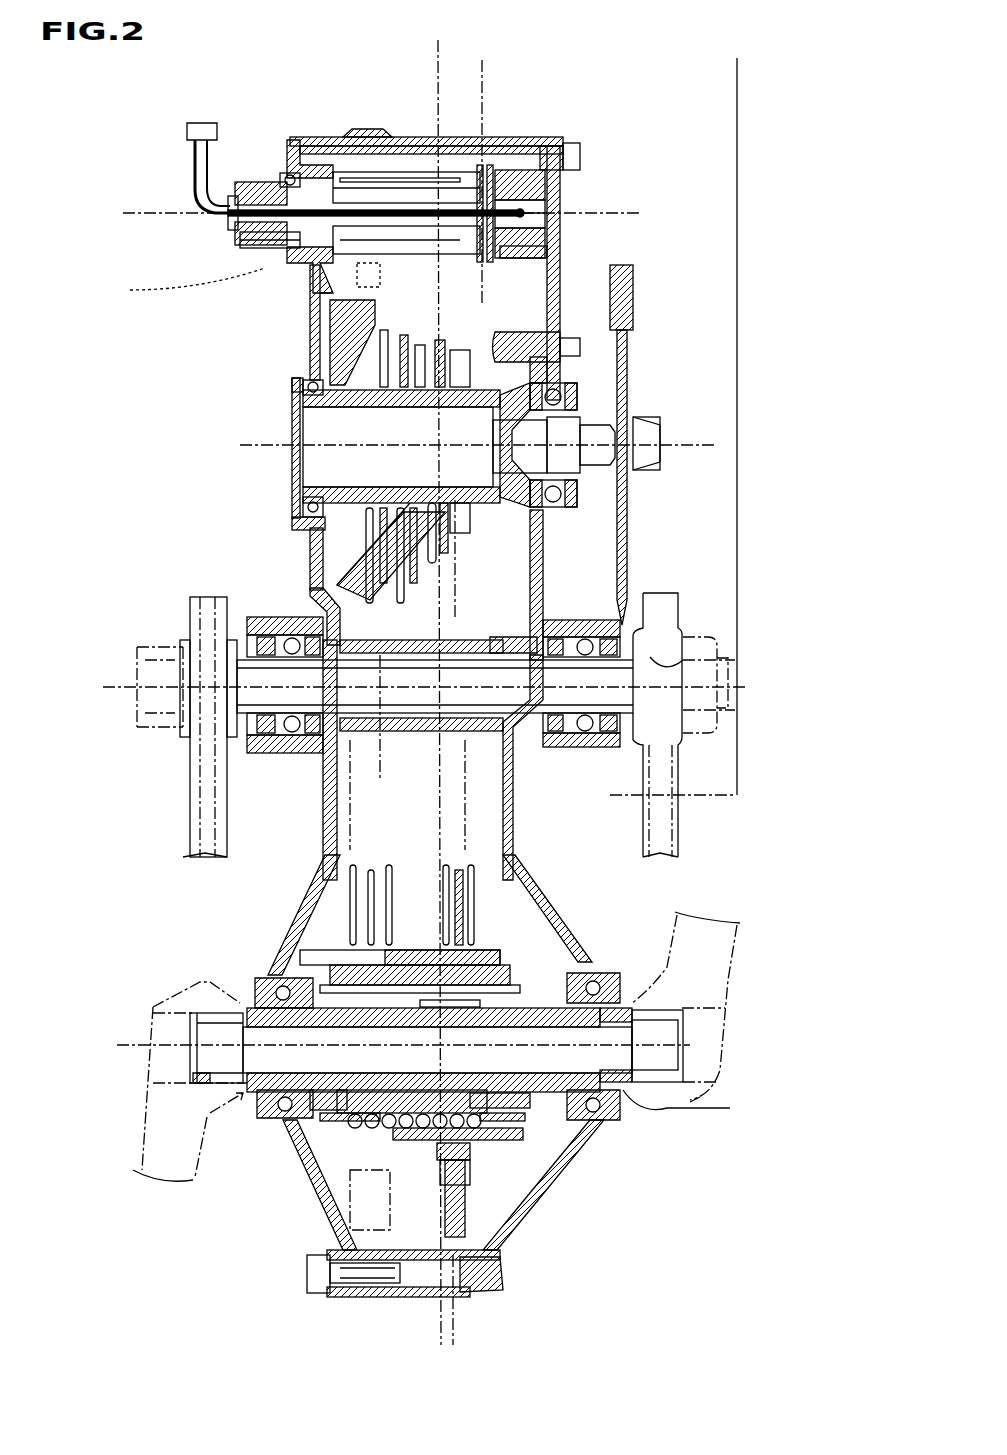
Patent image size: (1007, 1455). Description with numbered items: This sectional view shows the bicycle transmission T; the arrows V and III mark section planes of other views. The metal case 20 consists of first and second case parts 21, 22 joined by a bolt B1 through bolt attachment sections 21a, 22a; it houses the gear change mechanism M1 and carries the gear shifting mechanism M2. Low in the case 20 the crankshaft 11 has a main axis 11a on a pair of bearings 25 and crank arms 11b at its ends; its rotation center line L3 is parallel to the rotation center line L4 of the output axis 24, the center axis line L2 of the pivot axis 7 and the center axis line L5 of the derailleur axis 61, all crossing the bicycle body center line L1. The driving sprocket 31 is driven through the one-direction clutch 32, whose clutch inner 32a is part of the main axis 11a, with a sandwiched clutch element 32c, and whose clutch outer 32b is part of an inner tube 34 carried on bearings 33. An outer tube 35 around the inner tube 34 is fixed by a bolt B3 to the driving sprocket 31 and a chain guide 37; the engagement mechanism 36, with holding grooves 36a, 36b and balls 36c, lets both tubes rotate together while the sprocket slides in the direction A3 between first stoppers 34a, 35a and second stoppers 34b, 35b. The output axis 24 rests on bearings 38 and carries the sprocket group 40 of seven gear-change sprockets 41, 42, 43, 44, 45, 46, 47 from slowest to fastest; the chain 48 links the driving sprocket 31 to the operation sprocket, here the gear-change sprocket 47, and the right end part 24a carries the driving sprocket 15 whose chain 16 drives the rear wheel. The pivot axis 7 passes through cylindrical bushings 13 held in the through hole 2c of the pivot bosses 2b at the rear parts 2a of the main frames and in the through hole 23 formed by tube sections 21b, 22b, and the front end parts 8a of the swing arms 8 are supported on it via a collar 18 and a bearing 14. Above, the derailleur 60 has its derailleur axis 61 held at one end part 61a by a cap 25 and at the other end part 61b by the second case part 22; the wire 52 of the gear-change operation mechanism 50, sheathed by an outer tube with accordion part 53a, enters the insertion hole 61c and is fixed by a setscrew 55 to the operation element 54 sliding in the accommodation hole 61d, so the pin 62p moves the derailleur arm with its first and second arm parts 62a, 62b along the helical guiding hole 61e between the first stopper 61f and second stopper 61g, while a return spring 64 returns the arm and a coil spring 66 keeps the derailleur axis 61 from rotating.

The rear parts of the main frames 2a is at (195, 823).
The pivot bosses 2b is at (165, 735).
The through hole 2c is at (185, 760).
The pivot axis 7 is at (381, 745).
The swing arms 8 is at (413, 598).
The front end parts of the swing arms 8a is at (222, 600).
The crankshaft 11 is at (220, 1117).
The main axis 11a is at (697, 1111).
The crank arms 11b is at (145, 1122).
The cylindrical bushings 13 is at (342, 648).
The bearing 14 is at (280, 617).
The driving sprocket 15 is at (628, 560).
The chain 16 is at (636, 300).
The collar 18 is at (303, 663).
The case 20 is at (390, 93).
The first case part 21 is at (348, 149).
The bolt attachment sections 21a is at (343, 1304).
The tube section 21b is at (372, 775).
The second case part 22 is at (384, 134).
The bolt attachment sections 22a is at (405, 1304).
The tube section 22b is at (416, 778).
The through hole 23 is at (411, 578).
The output axis 24 is at (298, 482).
The right end part 24a is at (620, 405).
The bearings 25 is at (290, 268).
The driving sprocket 31 is at (503, 1255).
The one-direction clutch 32 is at (673, 1153).
The clutch inner 32a is at (575, 1140).
The clutch outer 32b is at (545, 1160).
The clutch element 32c is at (555, 1150).
The bearings 33 is at (363, 1093).
The inner tube 34 is at (420, 1085).
The first stopper 34a is at (548, 1068).
The second stopper 34b is at (312, 1092).
The outer tube 35 is at (320, 1195).
The first stopper 35a is at (390, 1128).
The second stopper 35b is at (515, 1127).
The engagement mechanism 36 is at (602, 1207).
The holding groove 36a is at (500, 1225).
The holding groove 36b is at (495, 1175).
The balls 36c is at (490, 1195).
The chain guide 37 is at (512, 868).
The bearings 38 is at (298, 512).
The sprocket group 40 is at (335, 583).
The gear-change sprocket 41 is at (325, 308).
The gear-change sprocket 42 is at (313, 330).
The gear-change sprocket 43 is at (317, 350).
The gear-change sprocket 44 is at (418, 345).
The gear-change sprocket 45 is at (432, 355).
The gear-change sprocket 46 is at (442, 505).
The gear-change sprocket 47 is at (463, 517).
The chain 48 is at (418, 495).
The gear-change operation mechanism 50 is at (237, 152).
The wire 52 is at (195, 137).
The accordion part 53a is at (187, 128).
The operation element 54 is at (524, 213).
The setscrew 55 is at (550, 256).
The derailleur 60 is at (294, 165).
The derailleur axis 61 is at (386, 258).
The one end part 61a is at (230, 150).
The other end part 61b is at (555, 190).
The insertion hole 61c is at (280, 235).
The accommodation hole 61d is at (370, 305).
The guiding hole 61e is at (456, 140).
The first stopper 61f is at (566, 160).
The second stopper 61g is at (437, 140).
The first arm part 62a is at (456, 263).
The second arm part 62b is at (500, 165).
The pin 62p is at (506, 172).
The return spring 64 is at (413, 140).
The coil spring 66 is at (182, 288).
The direction of the rotation center line L3 A3 is at (653, 1267).
The bolt B1 is at (307, 1275).
The bolt B3 is at (387, 1204).
The bicycle body center line L1 is at (432, 56).
The center axis line L2 is at (130, 700).
The rotation center line L3 is at (133, 1040).
The rotation center line L4 is at (240, 445).
The center axis line L5 is at (145, 225).
The gear change mechanism M1 is at (511, 912).
The gear shifting mechanism M2 is at (293, 93).
The transmission T is at (216, 322).
The section V is at (523, 87).
The section III is at (750, 88).